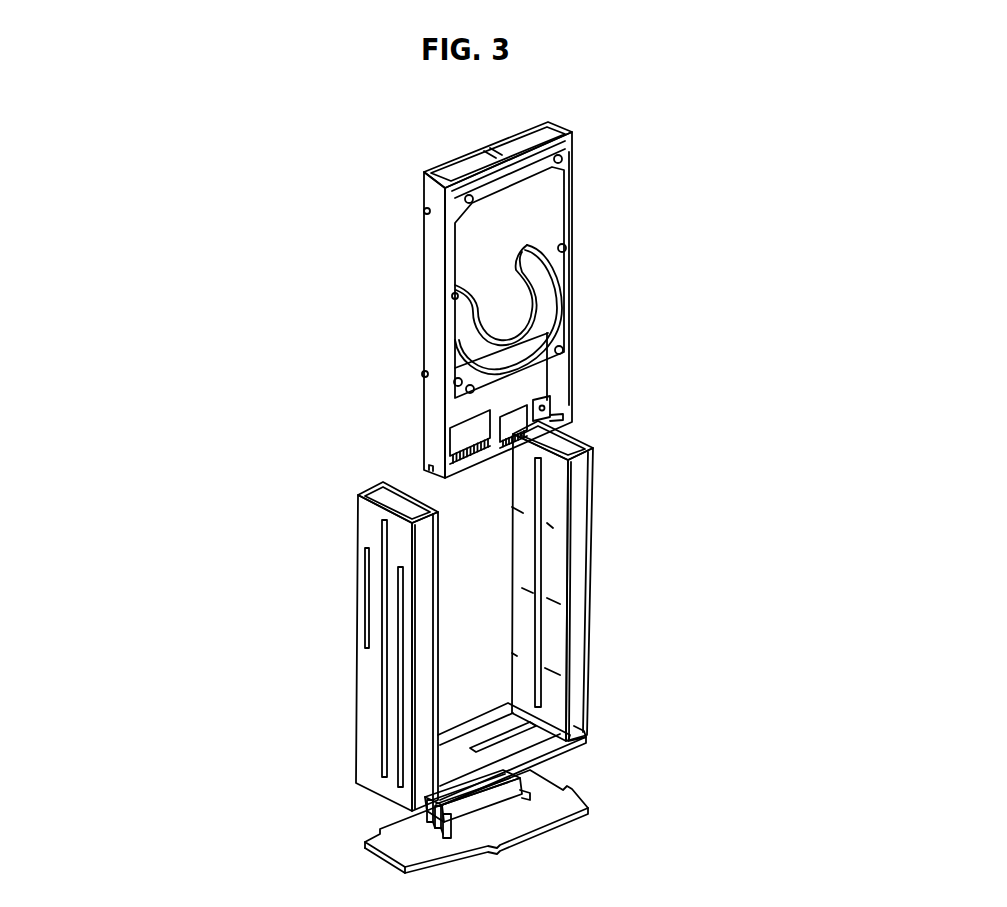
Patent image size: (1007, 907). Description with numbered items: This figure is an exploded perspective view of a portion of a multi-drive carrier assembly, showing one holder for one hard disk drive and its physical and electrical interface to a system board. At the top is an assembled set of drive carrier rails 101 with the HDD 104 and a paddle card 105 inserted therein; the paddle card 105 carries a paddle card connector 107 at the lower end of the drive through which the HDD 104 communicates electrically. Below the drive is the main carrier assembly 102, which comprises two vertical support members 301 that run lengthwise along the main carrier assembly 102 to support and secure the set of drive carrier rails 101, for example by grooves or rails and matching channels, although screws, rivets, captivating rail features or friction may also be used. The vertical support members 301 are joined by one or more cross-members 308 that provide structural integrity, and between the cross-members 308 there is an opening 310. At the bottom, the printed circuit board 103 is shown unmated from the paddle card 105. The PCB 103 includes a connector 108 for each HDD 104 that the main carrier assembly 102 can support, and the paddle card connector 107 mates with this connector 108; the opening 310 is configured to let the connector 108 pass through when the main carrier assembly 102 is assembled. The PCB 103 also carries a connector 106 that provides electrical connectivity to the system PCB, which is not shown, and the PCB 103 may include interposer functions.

The set of drive carrier rails 101 is at (573, 129).
The main carrier assembly 102 is at (619, 419).
The printed circuit board (PCB) 103 is at (575, 792).
The HDD 104 is at (488, 239).
The paddle card 105 is at (470, 413).
The connector 106 is at (498, 847).
The paddle card connector 107 is at (465, 451).
The connector 108 is at (422, 820).
The vertical support members 301 is at (592, 577).
The cross-members 308 is at (497, 748).
The opening 310 is at (428, 802).